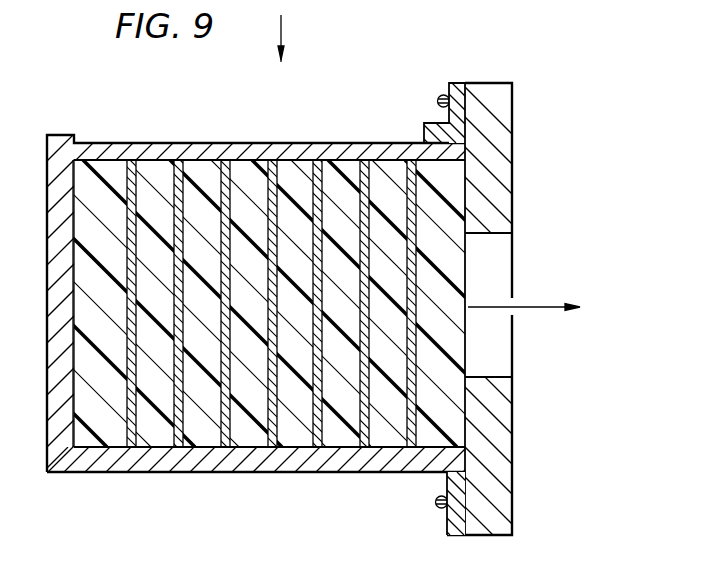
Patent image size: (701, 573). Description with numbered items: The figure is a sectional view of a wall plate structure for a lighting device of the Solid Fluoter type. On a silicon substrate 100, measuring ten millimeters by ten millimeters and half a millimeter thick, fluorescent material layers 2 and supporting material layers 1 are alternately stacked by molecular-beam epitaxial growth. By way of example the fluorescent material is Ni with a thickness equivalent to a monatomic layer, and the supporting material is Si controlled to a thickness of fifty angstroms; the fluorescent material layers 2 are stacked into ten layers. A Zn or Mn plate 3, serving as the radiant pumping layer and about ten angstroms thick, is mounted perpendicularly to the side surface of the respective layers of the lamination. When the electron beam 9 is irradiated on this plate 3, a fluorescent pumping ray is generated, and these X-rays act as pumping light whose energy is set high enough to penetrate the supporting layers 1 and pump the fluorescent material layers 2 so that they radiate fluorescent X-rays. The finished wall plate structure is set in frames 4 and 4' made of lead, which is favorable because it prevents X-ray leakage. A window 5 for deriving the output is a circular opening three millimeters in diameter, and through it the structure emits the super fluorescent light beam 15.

The supporting material layer 1 is at (163, 165).
The fluorescent material layer 2 is at (411, 447).
The radiant pumping layer 3 is at (405, 147).
The frame 4 is at (246, 325).
The frame 4' is at (356, 309).
The window 5 is at (500, 267).
The electron beam 9 is at (283, 31).
The super fluorescent light beam 15 is at (540, 308).
The silicon substrate 100 is at (101, 170).